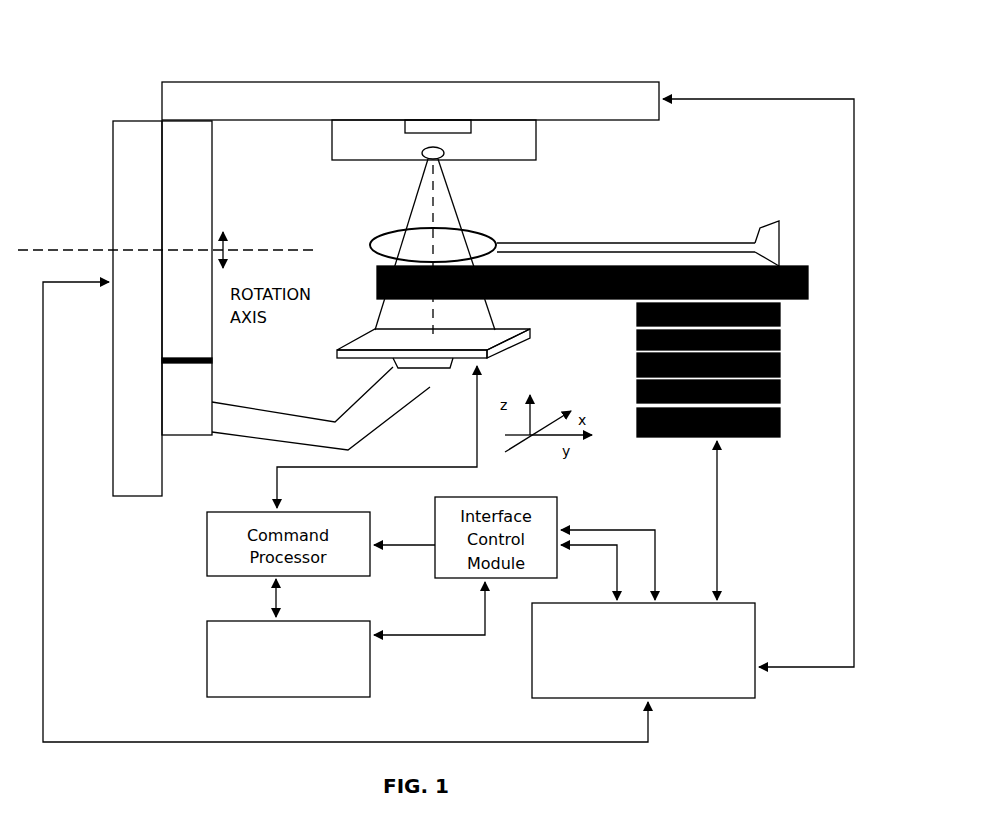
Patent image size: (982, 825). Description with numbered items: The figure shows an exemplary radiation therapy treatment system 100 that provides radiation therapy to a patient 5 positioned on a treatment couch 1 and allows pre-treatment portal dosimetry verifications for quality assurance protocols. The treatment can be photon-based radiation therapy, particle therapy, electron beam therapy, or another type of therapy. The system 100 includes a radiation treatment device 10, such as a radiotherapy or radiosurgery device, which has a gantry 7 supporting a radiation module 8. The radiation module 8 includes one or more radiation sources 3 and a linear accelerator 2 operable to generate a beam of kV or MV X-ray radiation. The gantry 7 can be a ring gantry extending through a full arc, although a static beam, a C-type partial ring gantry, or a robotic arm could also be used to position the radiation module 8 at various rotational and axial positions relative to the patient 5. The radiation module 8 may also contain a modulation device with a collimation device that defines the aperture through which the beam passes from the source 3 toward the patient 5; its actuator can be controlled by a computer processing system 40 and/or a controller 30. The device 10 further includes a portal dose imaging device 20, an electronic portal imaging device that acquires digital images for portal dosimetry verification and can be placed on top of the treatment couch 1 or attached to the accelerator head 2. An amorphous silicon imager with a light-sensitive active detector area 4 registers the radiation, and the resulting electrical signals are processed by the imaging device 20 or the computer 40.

The radiation therapy treatment system 100 is at (692, 79).
The treatment couch 1 is at (797, 266).
The linear accelerator 2 is at (471, 118).
The radiation source 3 is at (425, 148).
The active detector area 4 is at (550, 347).
The patient 5 is at (600, 241).
The gantry 7 is at (162, 98).
The radiation module 8 is at (536, 144).
The radiation treatment device 10 is at (113, 222).
The portal dose imaging device 20 is at (361, 375).
The controller 30 is at (745, 603).
The computer processing system 40 is at (207, 650).